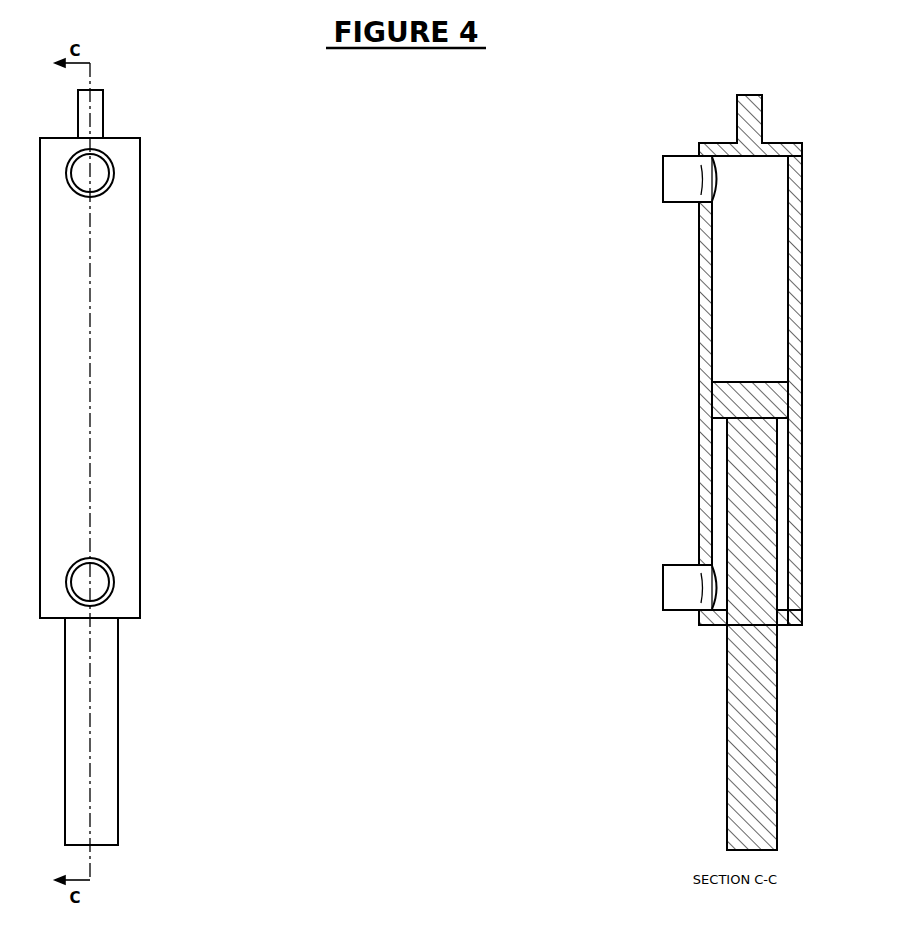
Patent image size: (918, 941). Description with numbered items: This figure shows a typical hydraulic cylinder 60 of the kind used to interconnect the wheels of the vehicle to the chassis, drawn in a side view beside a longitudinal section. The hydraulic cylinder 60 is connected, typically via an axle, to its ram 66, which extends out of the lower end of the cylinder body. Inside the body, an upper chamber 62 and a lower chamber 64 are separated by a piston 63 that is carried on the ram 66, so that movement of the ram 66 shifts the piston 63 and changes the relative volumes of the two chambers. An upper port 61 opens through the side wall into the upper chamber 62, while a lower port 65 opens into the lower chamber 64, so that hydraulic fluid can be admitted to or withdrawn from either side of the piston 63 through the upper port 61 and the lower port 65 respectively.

The hydraulic cylinder 60 is at (127, 153).
The upper port 61 is at (95, 181).
The upper chamber 62 is at (745, 273).
The piston 63 is at (743, 400).
The lower chamber 64 is at (722, 538).
The lower port 65 is at (95, 583).
The ram 66 is at (98, 727).